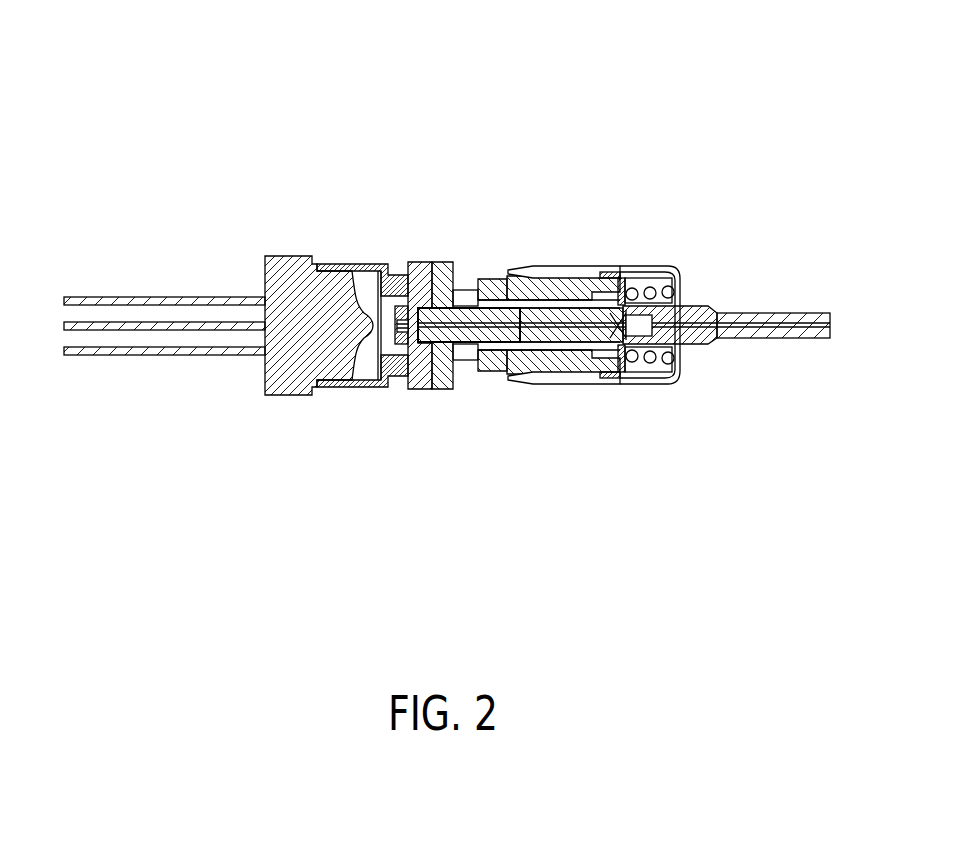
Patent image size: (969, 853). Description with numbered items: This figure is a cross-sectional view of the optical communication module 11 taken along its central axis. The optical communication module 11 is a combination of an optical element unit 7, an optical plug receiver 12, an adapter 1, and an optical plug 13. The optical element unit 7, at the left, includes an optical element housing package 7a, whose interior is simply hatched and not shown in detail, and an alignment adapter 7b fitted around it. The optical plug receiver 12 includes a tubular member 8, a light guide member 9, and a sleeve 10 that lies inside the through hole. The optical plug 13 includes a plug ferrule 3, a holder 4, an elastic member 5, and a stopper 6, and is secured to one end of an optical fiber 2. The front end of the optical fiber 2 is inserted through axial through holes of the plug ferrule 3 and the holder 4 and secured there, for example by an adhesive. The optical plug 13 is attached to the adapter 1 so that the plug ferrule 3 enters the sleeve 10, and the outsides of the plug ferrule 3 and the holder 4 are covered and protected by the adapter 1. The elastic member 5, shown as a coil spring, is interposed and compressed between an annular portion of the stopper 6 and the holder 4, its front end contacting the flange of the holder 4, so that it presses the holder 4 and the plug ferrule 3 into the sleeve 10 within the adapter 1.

The adapter 1 is at (484, 372).
The optical fiber 2 is at (531, 350).
The plug ferrule 3 is at (568, 337).
The holder 4 is at (617, 380).
The elastic member 5 is at (662, 376).
The stopper 6 is at (688, 346).
The optical element unit 7 is at (283, 535).
The optical element housing package 7a is at (288, 378).
The alignment adapter 7b is at (357, 385).
The tubular member 8 is at (421, 387).
The light guide member 9 is at (455, 388).
The sleeve 10 is at (533, 308).
The optical communication module 11 is at (534, 79).
The optical plug receiver 12 is at (395, 600).
The optical plug 13 is at (528, 600).